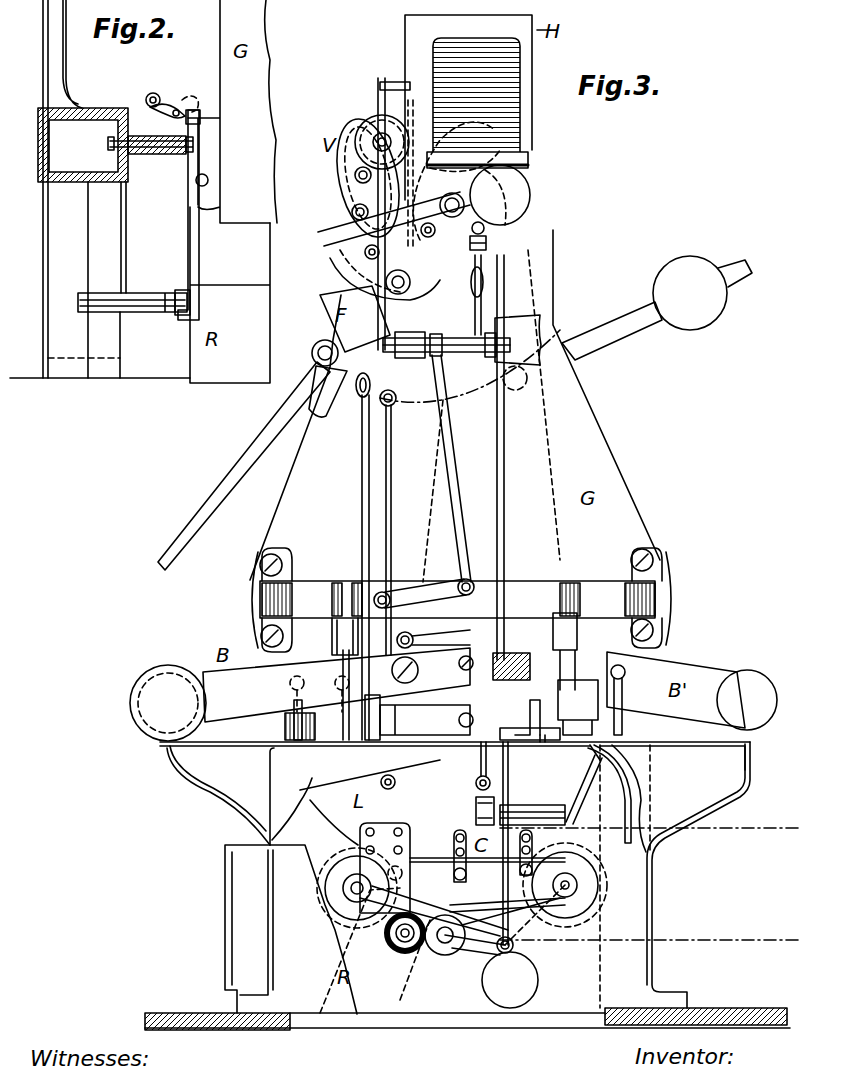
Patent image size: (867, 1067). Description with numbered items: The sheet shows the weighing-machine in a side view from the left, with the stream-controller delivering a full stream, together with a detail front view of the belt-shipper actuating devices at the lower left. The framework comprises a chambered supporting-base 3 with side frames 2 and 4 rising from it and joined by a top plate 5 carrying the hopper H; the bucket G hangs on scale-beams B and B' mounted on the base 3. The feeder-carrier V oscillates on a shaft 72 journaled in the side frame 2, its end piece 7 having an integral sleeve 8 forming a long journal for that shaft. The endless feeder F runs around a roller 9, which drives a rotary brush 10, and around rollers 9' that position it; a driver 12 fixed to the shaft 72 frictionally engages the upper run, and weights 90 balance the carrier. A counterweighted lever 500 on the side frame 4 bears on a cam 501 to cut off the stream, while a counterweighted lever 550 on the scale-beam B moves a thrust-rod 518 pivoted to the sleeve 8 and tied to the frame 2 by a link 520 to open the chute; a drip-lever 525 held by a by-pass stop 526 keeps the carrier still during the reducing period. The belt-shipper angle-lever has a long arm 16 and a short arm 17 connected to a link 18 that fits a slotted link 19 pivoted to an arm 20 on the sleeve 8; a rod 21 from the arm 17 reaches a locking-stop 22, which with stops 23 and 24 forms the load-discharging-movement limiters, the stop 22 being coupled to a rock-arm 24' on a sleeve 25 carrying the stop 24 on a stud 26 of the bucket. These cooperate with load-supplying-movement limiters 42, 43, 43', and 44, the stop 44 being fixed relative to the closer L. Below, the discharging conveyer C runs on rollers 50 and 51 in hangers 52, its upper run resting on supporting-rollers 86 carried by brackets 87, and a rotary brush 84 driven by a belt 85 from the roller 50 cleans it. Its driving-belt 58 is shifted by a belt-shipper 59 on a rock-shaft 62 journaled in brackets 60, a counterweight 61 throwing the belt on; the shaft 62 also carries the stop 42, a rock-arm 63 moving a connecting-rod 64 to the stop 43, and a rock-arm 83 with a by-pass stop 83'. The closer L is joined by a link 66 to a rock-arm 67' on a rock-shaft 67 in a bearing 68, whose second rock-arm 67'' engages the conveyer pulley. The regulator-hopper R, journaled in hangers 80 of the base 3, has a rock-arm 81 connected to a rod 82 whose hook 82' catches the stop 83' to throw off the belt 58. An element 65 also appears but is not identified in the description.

In FIG. 2, the side frame 2 is at (55, 64).
In FIG. 3, the side frame 2 is at (530, 335).
In FIG. 2, the chambered supporting-base 3 is at (58, 275).
In FIG. 3, the chambered supporting-base 3 is at (645, 912).
In FIG. 3, the side frame 4 is at (552, 452).
In FIG. 3, the cross-beam or top plate 5 is at (512, 96).
In FIG. 3, the end piece 7 is at (415, 160).
In FIG. 3, the sleeve 8 is at (464, 202).
In FIG. 3, the roller 9 is at (358, 177).
In FIG. 3, the roller 9' is at (334, 200).
In FIG. 3, the scraper or rotary brush 10 is at (330, 272).
In FIG. 3, the driver 12 is at (408, 150).
In FIG. 3, the long arm of angle-lever (belt-shipper) 16 is at (380, 108).
In FIG. 3, the short arm of angle-lever 17 is at (490, 356).
In FIG. 3, the link 18 is at (483, 318).
In FIG. 3, the slotted link 19 is at (484, 278).
In FIG. 3, the arm 20 is at (487, 240).
In FIG. 3, the rod 21 is at (504, 420).
In FIG. 3, the locking-stop 22 is at (515, 654).
In FIG. 3, the load-discharging-movement limiter 23 is at (330, 232).
In FIG. 3, the load-discharging-movement limiter 24 is at (419, 669).
In FIG. 3, the rock-arm 24' is at (433, 631).
In FIG. 3, the sleeve 25 is at (406, 592).
In FIG. 3, the stud 26 is at (345, 640).
In FIG. 3, the load-supplying-movement limiter or stop 42 is at (518, 738).
In FIG. 3, the load-supplying-movement limiter or stop 43 is at (339, 378).
In FIG. 3, the load-supplying-movement limiter or stop 43' is at (405, 416).
In FIG. 3, the load-supplying-movement limiter or stop 44 is at (426, 715).
In FIG. 3, the rotary carrier or roller 50 is at (580, 886).
In FIG. 3, the rotary carrier or roller 51 is at (342, 896).
In FIG. 3, the bracket or hanger 52 is at (395, 905).
In FIG. 3, the driving-belt 58 is at (726, 940).
In FIG. 3, the belt-shipper 59 is at (630, 790).
In FIG. 2, the bracket 60 is at (138, 110).
In FIG. 3, the bracket 60 is at (612, 738).
In FIG. 3, the counterweight 61 is at (588, 686).
In FIG. 2, the rock-shaft 62 is at (150, 98).
In FIG. 3, the rock-shaft 62 is at (590, 744).
In FIG. 3, the rock-arm 63 is at (370, 793).
In FIG. 3, the connecting-rod 64 is at (362, 490).
In FIG. 3, the rod 65 is at (392, 512).
In FIG. 3, the link 66 is at (478, 778).
In FIG. 3, the rock-shaft 67 is at (519, 843).
In FIG. 3, the rock-arm 67' is at (464, 808).
In FIG. 3, the second rock-arm 67'' is at (592, 791).
In FIG. 2, the bearing 68 is at (210, 178).
In FIG. 3, the bearing 68 is at (540, 806).
In FIG. 3, the shaft 72 is at (425, 222).
In FIG. 2, the hanger 80 is at (100, 238).
In FIG. 3, the hanger 80 is at (445, 955).
In FIG. 2, the rock-arm 81 is at (183, 302).
In FIG. 3, the rock-arm 81 is at (491, 971).
In FIG. 2, the rod 82 is at (171, 215).
In FIG. 3, the rod 82 is at (507, 898).
In FIG. 2, the hook 82' is at (220, 113).
In FIG. 2, the rock-arm 83 is at (159, 87).
In FIG. 3, the rock-arm 83 is at (538, 753).
In FIG. 2, the stop 83' is at (185, 89).
In FIG. 3, the scraper or rotary brush 84 is at (398, 950).
In FIG. 3, the belt 85 is at (525, 932).
In FIG. 3, the supporting-roller 86 is at (400, 872).
In FIG. 3, the bracket 87 is at (454, 850).
In FIG. 3, the weight 90 is at (530, 192).
In FIG. 3, the counterweighted lever 500 is at (607, 332).
In FIG. 3, the cam 501 is at (345, 322).
In FIG. 3, the thrust-rod 518 is at (458, 488).
In FIG. 3, the link 520 is at (437, 595).
In FIG. 3, the drip-lever 525 is at (232, 464).
In FIG. 3, the by-pass stop 526 is at (462, 677).
In FIG. 3, the counterweighted lever 550 is at (300, 694).